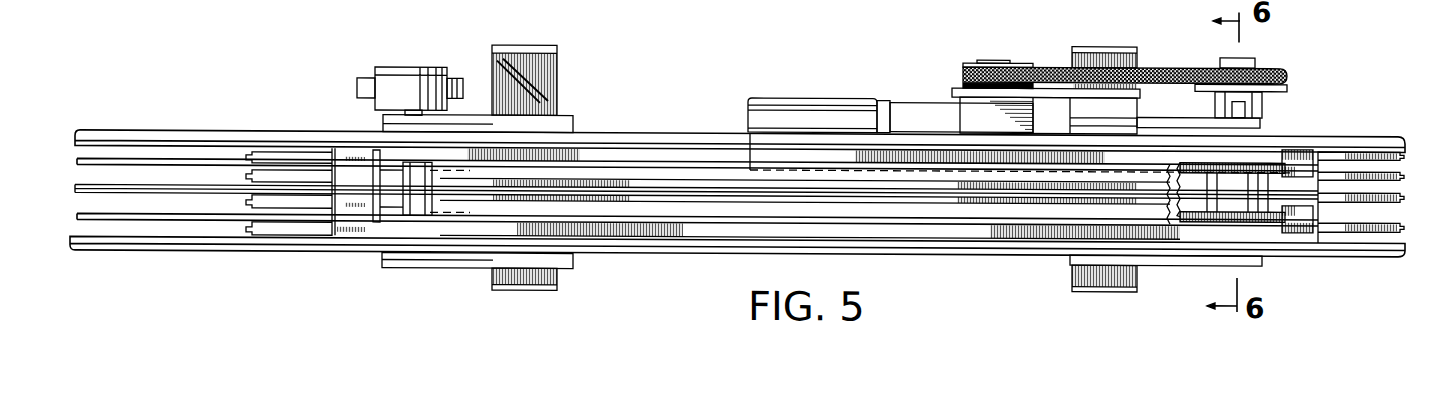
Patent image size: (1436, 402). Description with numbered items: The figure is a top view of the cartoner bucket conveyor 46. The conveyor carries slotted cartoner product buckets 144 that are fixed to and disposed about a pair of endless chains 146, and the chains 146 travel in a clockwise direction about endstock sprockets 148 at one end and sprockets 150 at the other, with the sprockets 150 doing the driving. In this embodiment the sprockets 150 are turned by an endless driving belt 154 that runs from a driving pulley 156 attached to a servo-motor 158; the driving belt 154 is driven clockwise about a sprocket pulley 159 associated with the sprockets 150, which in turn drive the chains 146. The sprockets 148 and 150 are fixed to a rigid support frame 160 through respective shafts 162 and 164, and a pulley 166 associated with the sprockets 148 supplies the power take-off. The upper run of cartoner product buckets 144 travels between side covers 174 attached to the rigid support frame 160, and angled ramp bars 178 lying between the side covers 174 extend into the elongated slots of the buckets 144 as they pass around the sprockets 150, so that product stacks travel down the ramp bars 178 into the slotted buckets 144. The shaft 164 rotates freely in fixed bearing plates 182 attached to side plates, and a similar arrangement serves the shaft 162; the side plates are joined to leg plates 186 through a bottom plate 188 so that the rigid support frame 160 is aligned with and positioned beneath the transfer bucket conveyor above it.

The cartoner bucket conveyor 46 is at (737, 166).
The cartoner product buckets 144 is at (825, 219).
The endless chains 146 is at (836, 194).
The sprockets 148 is at (378, 203).
The sprockets 150 is at (1249, 226).
The endless driving belt 154 is at (1046, 77).
The driving pulley 156 is at (980, 61).
The servo-motor 158 is at (890, 96).
The sprocket pulley 159 is at (1142, 63).
The rigid support frame 160 is at (860, 160).
The shaft 162 is at (416, 72).
The shaft 164 is at (1217, 76).
The pulley 166 is at (381, 81).
The side covers 174 is at (737, 199).
The angled ramp bars 178 is at (696, 199).
The bearing plates 182 is at (822, 195).
The leg plates 186 is at (822, 167).
The bottom plate 188 is at (785, 185).